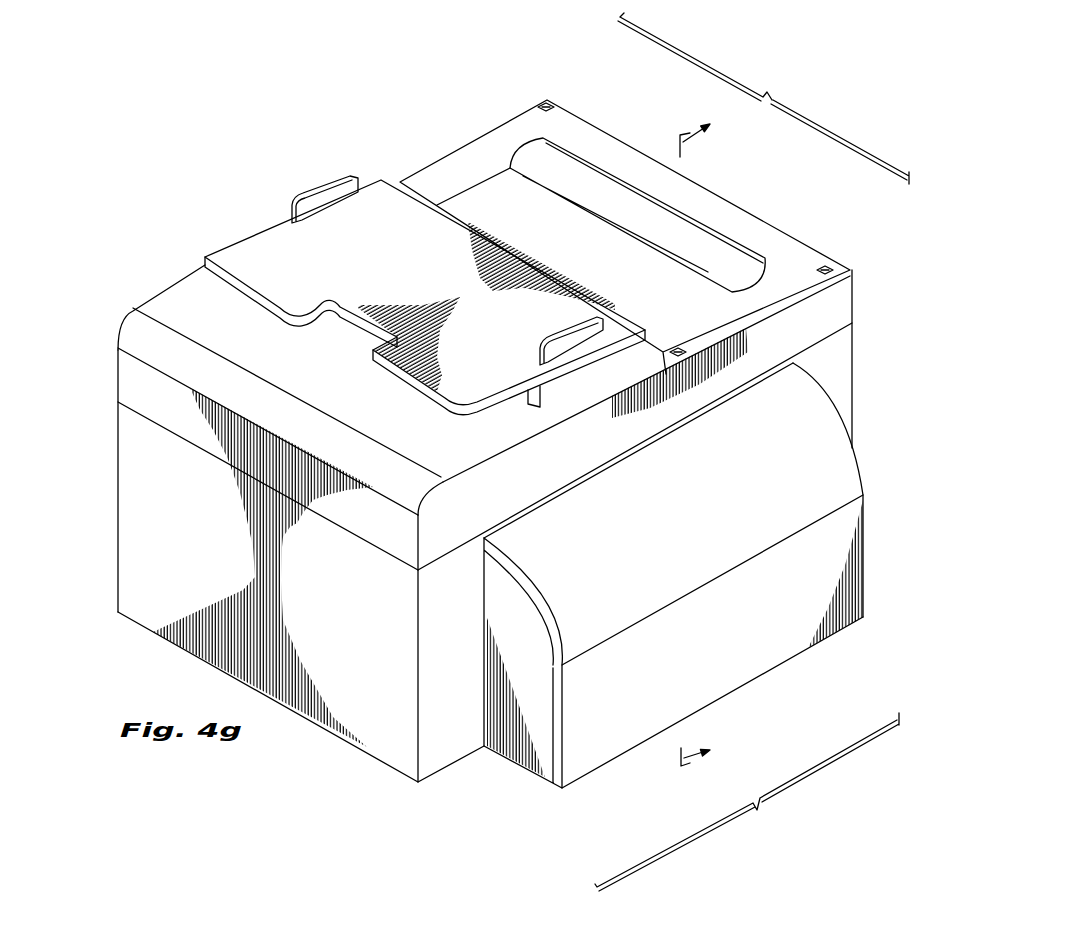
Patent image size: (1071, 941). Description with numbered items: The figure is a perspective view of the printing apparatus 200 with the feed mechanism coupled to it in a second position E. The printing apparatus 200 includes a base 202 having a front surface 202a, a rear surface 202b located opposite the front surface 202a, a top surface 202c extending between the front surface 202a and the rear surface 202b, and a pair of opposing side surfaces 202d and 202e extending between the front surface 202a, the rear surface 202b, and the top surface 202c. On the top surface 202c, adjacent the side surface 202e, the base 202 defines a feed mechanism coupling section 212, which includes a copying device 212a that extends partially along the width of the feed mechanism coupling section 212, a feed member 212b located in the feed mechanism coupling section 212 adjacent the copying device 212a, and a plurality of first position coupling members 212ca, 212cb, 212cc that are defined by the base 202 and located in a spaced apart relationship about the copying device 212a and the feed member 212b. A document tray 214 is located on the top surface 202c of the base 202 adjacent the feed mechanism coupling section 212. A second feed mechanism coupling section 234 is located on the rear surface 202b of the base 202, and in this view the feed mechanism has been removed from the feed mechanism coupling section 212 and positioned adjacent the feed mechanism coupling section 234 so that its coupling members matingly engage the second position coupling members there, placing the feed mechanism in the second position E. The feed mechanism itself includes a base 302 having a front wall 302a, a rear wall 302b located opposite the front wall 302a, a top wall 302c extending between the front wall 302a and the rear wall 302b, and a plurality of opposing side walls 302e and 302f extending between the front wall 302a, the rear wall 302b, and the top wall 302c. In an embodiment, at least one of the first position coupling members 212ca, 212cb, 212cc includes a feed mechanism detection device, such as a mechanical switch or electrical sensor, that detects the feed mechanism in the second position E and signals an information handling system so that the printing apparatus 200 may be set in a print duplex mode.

The printing apparatus 200 is at (324, 118).
The base 202 is at (163, 285).
The front surface 202a is at (115, 481).
The rear surface 202b is at (434, 765).
The top surface 202c is at (341, 367).
The side surface 202d is at (375, 753).
The side surface 202e is at (856, 360).
The feed mechanism coupling section 212 is at (654, 193).
The copying device 212a is at (505, 163).
The feed member 212b is at (732, 252).
The first position coupling member 212ca is at (545, 104).
The first position coupling member 212cb is at (830, 264).
The first position coupling member 212cc is at (676, 350).
The document tray 214 is at (255, 243).
The feed mechanism coupling section 234 is at (747, 802).
The base 302 is at (607, 778).
The front wall 302a is at (786, 662).
The rear wall 302b is at (714, 508).
The top wall 302c is at (740, 653).
The side wall 302e is at (530, 770).
The side wall 302f is at (864, 553).
The second position E is at (855, 652).